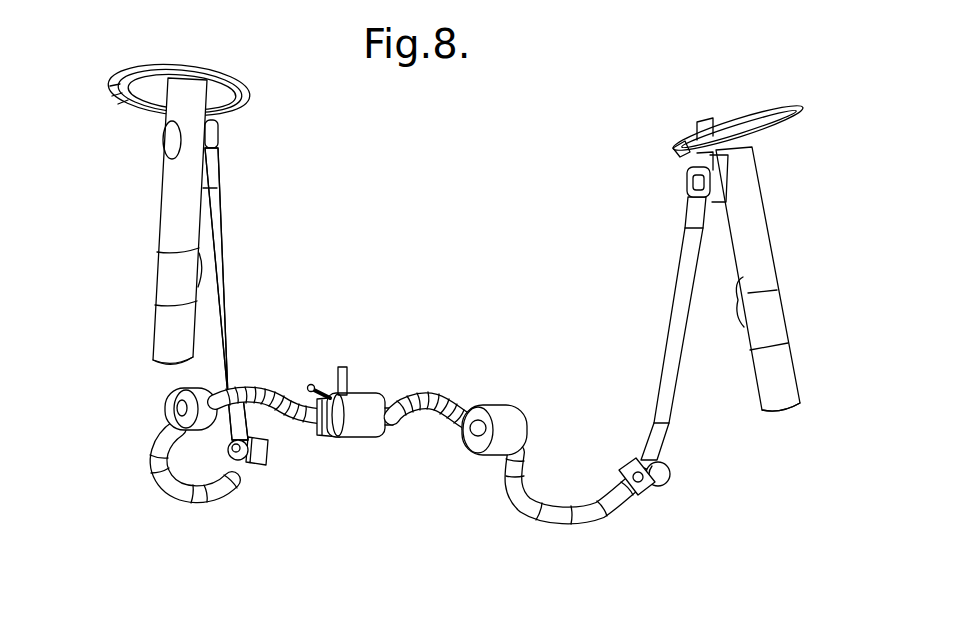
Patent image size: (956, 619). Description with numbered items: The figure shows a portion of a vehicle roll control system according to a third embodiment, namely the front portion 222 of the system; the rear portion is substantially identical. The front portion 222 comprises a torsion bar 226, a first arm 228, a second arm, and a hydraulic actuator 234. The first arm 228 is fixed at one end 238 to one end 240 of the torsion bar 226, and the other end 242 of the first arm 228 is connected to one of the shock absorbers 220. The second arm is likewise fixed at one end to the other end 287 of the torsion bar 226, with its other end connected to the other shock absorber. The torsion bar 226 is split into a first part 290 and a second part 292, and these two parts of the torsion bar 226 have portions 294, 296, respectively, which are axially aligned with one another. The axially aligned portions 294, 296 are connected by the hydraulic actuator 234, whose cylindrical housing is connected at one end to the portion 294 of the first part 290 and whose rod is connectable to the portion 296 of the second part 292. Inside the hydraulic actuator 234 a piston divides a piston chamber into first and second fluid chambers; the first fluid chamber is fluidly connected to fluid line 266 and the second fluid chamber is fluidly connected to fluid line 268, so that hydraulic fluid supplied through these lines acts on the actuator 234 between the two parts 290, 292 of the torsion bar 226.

The shock absorber 220 is at (170, 217).
The front portion 222 is at (439, 343).
The torsion bar 226 is at (423, 414).
The first arm 228 is at (232, 300).
The hydraulic actuator 234 is at (366, 394).
The one end of first arm 238 is at (197, 488).
The one end of torsion bar 240 is at (258, 460).
The other end of first arm 242 is at (218, 140).
The fluid line 266 is at (320, 392).
The fluid line 268 is at (343, 366).
The other end of torsion bar 287 is at (652, 493).
The first part of torsion bar 290 is at (277, 386).
The second part of torsion bar 292 is at (512, 486).
The portion of first part 294 is at (330, 418).
The portion of second part 296 is at (393, 407).